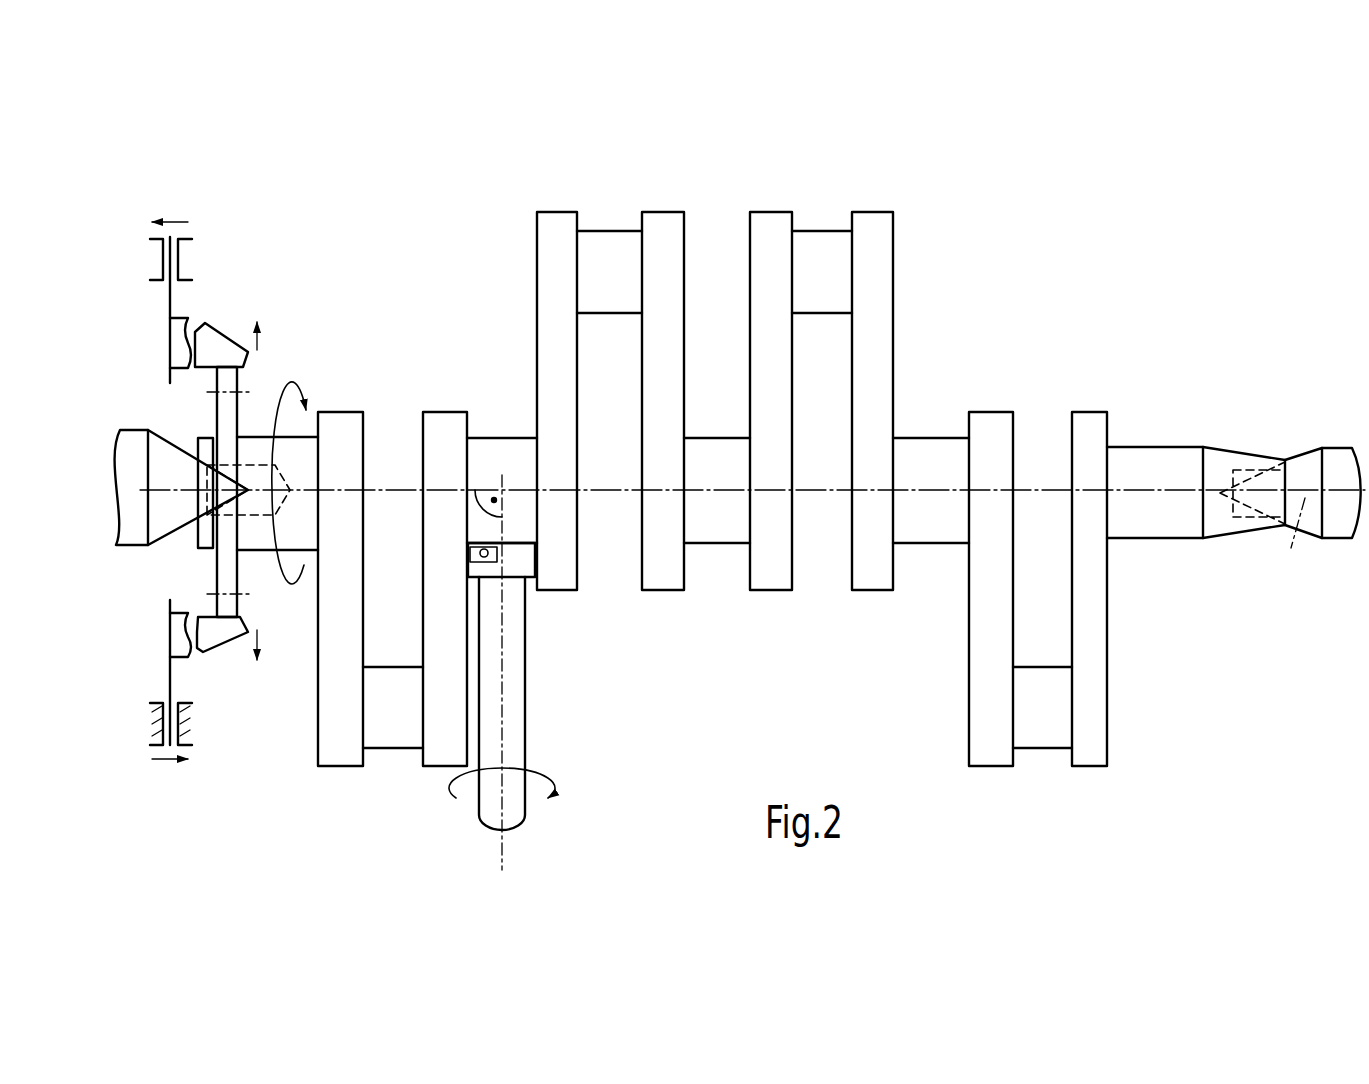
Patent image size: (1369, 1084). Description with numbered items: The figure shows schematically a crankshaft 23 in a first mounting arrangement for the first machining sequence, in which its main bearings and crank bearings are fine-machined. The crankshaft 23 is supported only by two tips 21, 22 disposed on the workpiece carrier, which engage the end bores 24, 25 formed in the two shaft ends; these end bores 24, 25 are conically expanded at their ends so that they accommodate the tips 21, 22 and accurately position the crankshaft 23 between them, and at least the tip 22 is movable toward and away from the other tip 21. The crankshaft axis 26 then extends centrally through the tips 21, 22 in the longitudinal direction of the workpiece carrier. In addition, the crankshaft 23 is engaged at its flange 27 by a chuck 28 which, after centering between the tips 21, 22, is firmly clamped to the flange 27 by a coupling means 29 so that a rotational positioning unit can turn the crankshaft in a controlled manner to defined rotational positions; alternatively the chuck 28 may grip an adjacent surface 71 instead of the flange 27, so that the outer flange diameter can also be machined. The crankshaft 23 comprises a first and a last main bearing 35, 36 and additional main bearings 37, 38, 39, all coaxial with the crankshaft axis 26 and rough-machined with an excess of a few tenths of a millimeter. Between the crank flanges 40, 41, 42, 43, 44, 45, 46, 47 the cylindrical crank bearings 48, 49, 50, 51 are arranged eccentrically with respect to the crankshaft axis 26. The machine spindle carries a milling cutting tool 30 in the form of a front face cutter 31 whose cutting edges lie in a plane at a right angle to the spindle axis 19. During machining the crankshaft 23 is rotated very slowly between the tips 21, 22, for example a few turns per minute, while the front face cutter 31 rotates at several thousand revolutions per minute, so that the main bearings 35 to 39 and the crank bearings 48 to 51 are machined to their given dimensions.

The spindle axis 19 is at (503, 858).
The tip 21 is at (148, 432).
The tip 22 is at (1330, 448).
The crankshaft 23 is at (975, 228).
The end bore 24 is at (246, 462).
The end bore 25 is at (1265, 465).
The crankshaft axis 26 is at (1290, 550).
The flange 27 is at (230, 378).
The chuck 28 is at (228, 313).
The coupling means 29 is at (190, 210).
The milling cutting tool 30 is at (550, 690).
The front face cutter 31 is at (512, 622).
The first main bearing 35 is at (310, 428).
The last main bearing 36 is at (1153, 428).
The main bearing 37 is at (493, 428).
The main bearing 38 is at (708, 428).
The main bearing 39 is at (935, 430).
The crank flange 40 is at (334, 758).
The crank flange 41 is at (442, 745).
The crank flange 42 is at (563, 572).
The crank flange 43 is at (663, 577).
The crank flange 44 is at (775, 410).
The crank flange 45 is at (890, 355).
The crank flange 46 is at (993, 630).
The crank flange 47 is at (1090, 640).
The crank bearing 48 is at (390, 735).
The crank bearing 49 is at (615, 245).
The crank bearing 50 is at (822, 243).
The crank bearing 51 is at (1032, 733).
The adjacent surface 71 is at (203, 437).